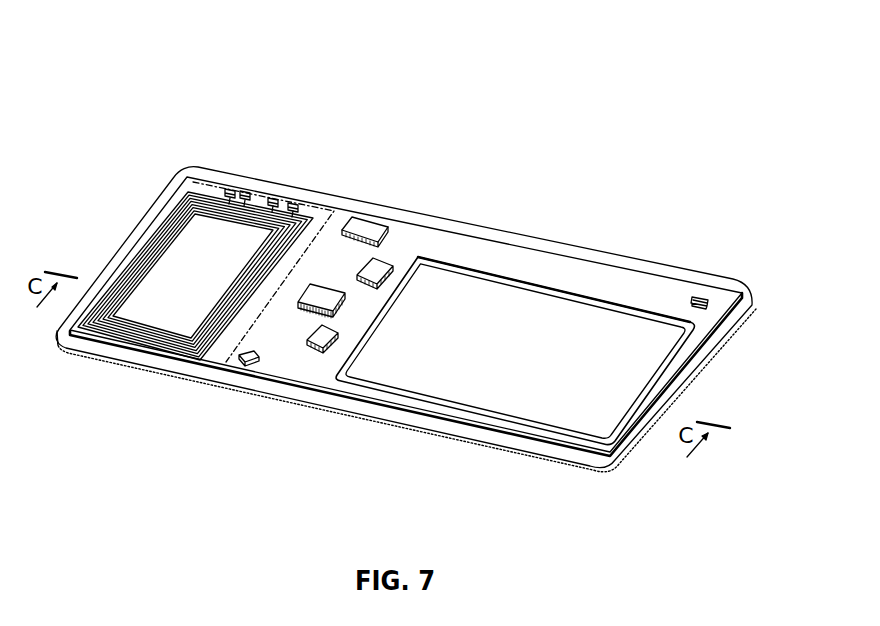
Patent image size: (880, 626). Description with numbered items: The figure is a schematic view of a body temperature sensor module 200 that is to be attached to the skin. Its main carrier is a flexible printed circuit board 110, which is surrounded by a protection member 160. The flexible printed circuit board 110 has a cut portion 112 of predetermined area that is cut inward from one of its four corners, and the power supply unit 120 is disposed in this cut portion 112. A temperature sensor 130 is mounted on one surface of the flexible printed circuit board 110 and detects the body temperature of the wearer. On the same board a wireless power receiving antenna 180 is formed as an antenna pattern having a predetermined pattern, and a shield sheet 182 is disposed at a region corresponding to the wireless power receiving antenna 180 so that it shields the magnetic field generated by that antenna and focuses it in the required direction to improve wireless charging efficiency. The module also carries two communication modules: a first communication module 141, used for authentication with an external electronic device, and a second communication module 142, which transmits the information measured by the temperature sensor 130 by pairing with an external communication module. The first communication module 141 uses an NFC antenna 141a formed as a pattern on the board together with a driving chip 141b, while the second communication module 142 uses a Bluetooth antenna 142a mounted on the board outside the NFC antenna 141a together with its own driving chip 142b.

The body temperature sensor module 200 is at (490, 80).
The flexible printed circuit board 110 is at (645, 287).
The cut portion 112 is at (485, 270).
The power supply unit 120 is at (560, 327).
The temperature sensor 130 is at (702, 297).
The first communication module 141 is at (245, 219).
The NFC antenna 141a is at (255, 212).
The driving chip 141b is at (367, 230).
The second communication module 142 is at (266, 416).
The Bluetooth antenna 142a is at (242, 364).
The driving chip 142b is at (309, 350).
The protection member 160 is at (425, 212).
The wireless power receiving antenna 180 is at (185, 233).
The shield sheet 182 is at (322, 232).